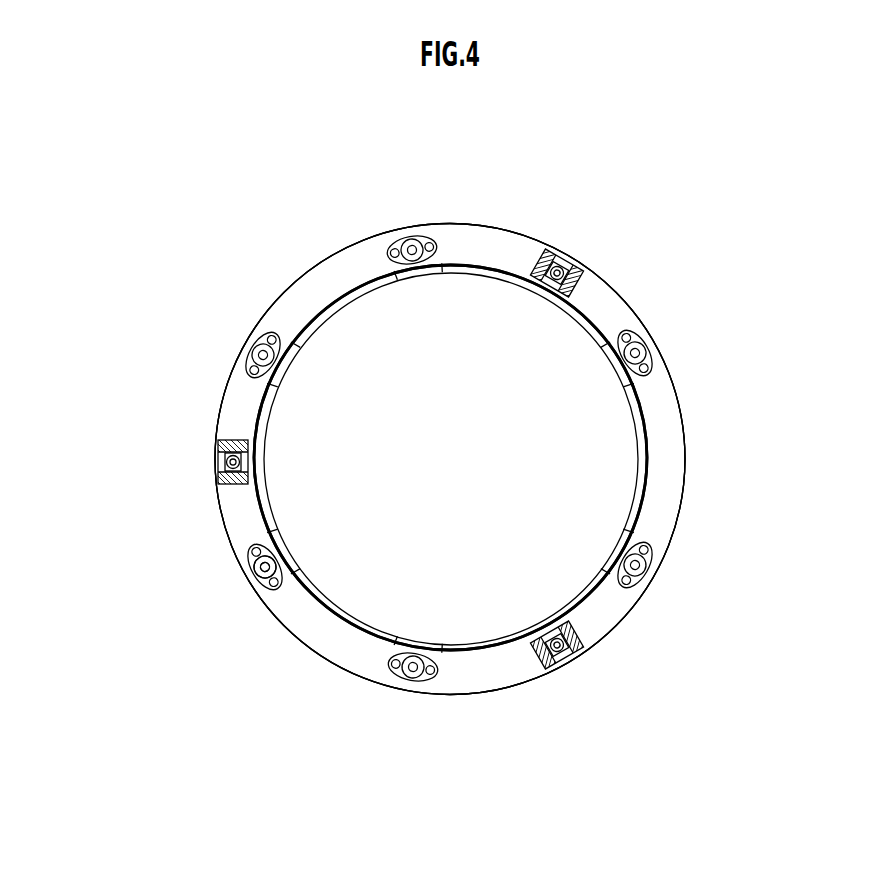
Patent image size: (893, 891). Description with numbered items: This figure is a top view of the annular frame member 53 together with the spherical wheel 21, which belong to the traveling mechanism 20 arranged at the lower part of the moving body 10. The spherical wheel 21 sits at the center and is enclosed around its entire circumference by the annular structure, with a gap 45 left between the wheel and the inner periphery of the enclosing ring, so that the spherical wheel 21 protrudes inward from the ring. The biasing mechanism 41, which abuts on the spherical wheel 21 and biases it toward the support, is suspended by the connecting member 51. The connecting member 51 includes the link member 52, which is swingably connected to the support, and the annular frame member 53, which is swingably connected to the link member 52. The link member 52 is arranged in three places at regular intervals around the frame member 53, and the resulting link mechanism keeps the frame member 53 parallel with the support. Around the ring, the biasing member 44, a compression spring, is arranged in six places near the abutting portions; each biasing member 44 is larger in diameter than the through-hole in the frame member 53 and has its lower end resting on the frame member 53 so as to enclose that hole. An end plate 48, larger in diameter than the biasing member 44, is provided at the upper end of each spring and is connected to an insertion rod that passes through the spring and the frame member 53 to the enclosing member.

The moving body 10 is at (112, 217).
The traveling mechanism 20 is at (118, 320).
The spherical wheel 21 is at (470, 642).
The biasing mechanism 41 is at (672, 540).
The biasing member 44 is at (247, 549).
The gap 45 is at (493, 266).
The end plate 48 is at (272, 597).
The connecting member 51 is at (561, 251).
The link member 52 is at (582, 266).
The annular frame member 53 is at (323, 640).